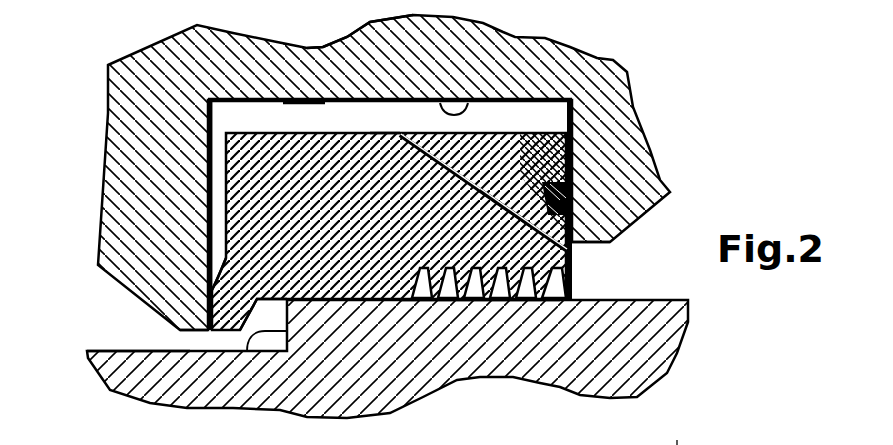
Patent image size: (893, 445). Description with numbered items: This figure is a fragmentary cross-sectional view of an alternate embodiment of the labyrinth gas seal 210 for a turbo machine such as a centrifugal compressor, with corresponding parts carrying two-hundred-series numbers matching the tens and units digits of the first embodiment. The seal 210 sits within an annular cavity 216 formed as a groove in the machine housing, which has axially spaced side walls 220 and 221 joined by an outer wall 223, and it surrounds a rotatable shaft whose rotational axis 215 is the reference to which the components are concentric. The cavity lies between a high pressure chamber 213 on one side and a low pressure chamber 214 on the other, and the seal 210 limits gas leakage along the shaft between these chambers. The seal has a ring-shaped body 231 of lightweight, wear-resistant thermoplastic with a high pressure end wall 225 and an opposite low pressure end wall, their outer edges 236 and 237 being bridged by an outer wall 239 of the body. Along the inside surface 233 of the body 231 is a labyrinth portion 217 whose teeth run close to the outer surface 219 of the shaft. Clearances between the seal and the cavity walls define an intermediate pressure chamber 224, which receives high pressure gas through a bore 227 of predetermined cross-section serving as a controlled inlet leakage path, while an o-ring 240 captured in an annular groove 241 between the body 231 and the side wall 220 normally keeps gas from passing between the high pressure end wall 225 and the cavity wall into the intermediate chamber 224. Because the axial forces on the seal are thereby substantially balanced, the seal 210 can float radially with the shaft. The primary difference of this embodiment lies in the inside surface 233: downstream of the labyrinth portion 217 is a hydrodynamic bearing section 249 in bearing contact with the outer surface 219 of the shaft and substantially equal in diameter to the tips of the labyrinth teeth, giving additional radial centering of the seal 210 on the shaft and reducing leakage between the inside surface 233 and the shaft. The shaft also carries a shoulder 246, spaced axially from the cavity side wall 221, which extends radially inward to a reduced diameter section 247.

The seal 210 is at (225, 182).
The high pressure chamber 213 is at (667, 265).
The low pressure chamber 214 is at (128, 321).
The rotational axis 215 is at (677, 444).
The annular cavity 216 is at (353, 113).
The labyrinth portion 217 is at (428, 300).
The outer surface of shaft 219 is at (658, 300).
The cavity side wall 220 is at (533, 110).
The cavity side wall 221 is at (207, 232).
The outer wall of cavity 223 is at (473, 101).
The intermediate pressure chamber 224 is at (320, 130).
The high pressure end wall 225 is at (570, 268).
The inlet leakage path (bore) 227 is at (446, 170).
The seal body 231 is at (323, 226).
The inside surface of body 233 is at (527, 282).
The outer edge of high pressure end wall 236 is at (571, 116).
The outer edge of low pressure end wall 237 is at (217, 124).
The outer wall of body 239 is at (383, 130).
The o-ring 240 is at (545, 163).
The annular groove 241 is at (515, 213).
The shoulder 246 is at (250, 352).
The reduced diameter section 247 is at (113, 350).
The hydrodynamic bearing section 249 is at (342, 300).